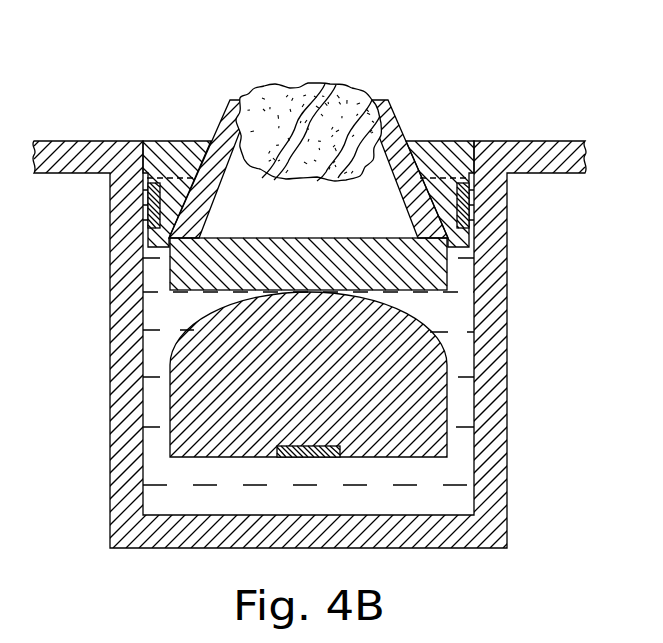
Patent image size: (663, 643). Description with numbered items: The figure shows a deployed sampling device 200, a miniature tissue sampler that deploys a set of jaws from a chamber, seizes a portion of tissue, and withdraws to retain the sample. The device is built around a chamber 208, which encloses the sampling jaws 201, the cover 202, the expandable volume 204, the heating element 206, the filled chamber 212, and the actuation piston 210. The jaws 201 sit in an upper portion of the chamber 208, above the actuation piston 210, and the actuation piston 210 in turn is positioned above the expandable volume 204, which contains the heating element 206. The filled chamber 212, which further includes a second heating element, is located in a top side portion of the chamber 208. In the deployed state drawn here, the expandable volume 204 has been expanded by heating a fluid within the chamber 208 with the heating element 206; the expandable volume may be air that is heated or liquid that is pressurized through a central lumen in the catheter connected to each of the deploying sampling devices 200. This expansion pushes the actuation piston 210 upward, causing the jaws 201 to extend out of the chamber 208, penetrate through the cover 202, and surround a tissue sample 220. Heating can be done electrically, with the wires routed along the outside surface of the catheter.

The deployed sampling device 200 is at (131, 104).
The sampling jaws 201 is at (220, 195).
The cover 202 is at (443, 141).
The expandable volume 204 is at (331, 389).
The heating element 206 is at (150, 222).
The chamber 208 is at (464, 500).
The actuation piston 210 is at (331, 274).
The filled chamber 212 is at (148, 250).
The tissue sample 220 is at (322, 86).